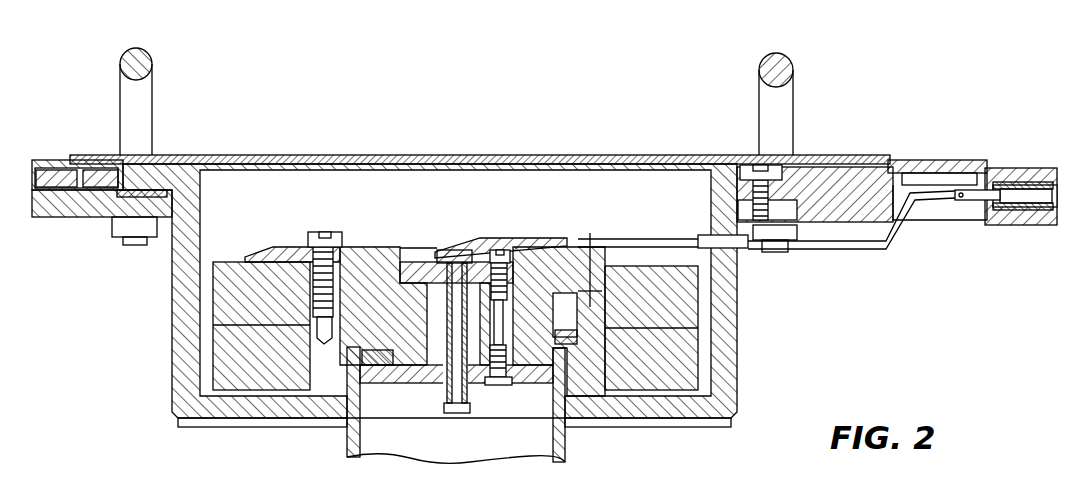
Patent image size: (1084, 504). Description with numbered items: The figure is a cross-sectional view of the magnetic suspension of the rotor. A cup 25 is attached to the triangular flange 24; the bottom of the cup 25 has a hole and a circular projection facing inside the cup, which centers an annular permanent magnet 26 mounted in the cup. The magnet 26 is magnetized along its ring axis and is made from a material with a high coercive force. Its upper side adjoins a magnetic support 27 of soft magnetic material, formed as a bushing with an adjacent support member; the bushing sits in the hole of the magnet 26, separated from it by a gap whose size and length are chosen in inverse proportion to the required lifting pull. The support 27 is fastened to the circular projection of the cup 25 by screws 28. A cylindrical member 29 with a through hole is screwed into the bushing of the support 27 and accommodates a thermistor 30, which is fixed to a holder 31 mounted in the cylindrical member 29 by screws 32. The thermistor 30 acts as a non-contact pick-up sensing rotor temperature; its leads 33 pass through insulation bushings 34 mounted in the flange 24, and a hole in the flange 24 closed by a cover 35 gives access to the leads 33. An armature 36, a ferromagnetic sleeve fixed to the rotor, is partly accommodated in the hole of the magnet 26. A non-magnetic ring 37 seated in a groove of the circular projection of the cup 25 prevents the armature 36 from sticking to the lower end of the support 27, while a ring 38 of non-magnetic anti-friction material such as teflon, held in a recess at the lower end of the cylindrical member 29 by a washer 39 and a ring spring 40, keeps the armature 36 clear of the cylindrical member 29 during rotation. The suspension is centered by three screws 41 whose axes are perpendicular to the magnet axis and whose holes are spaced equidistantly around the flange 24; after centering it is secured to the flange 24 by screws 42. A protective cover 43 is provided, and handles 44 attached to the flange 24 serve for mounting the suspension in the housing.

The flange 24 is at (50, 158).
The cup 25 is at (197, 211).
The annular permanent magnet 26 is at (219, 262).
The magnetic support 27 is at (278, 249).
The screws 28 is at (333, 232).
The cylindrical member 29 is at (401, 262).
The thermistor 30 is at (467, 407).
The holder 31 is at (423, 262).
The screws 32 is at (503, 256).
The leads 33 is at (886, 250).
The insulation bushings 34 is at (1013, 168).
The cover 35 is at (957, 160).
The armature 36 is at (553, 435).
The non-magnetic ring 37 is at (362, 262).
The ring 38 is at (432, 385).
The washer 39 is at (441, 414).
The ring spring 40 is at (362, 380).
The screws 41 is at (62, 168).
The screws 42 is at (752, 160).
The protective cover 43 is at (267, 155).
The handles 44 is at (140, 116).